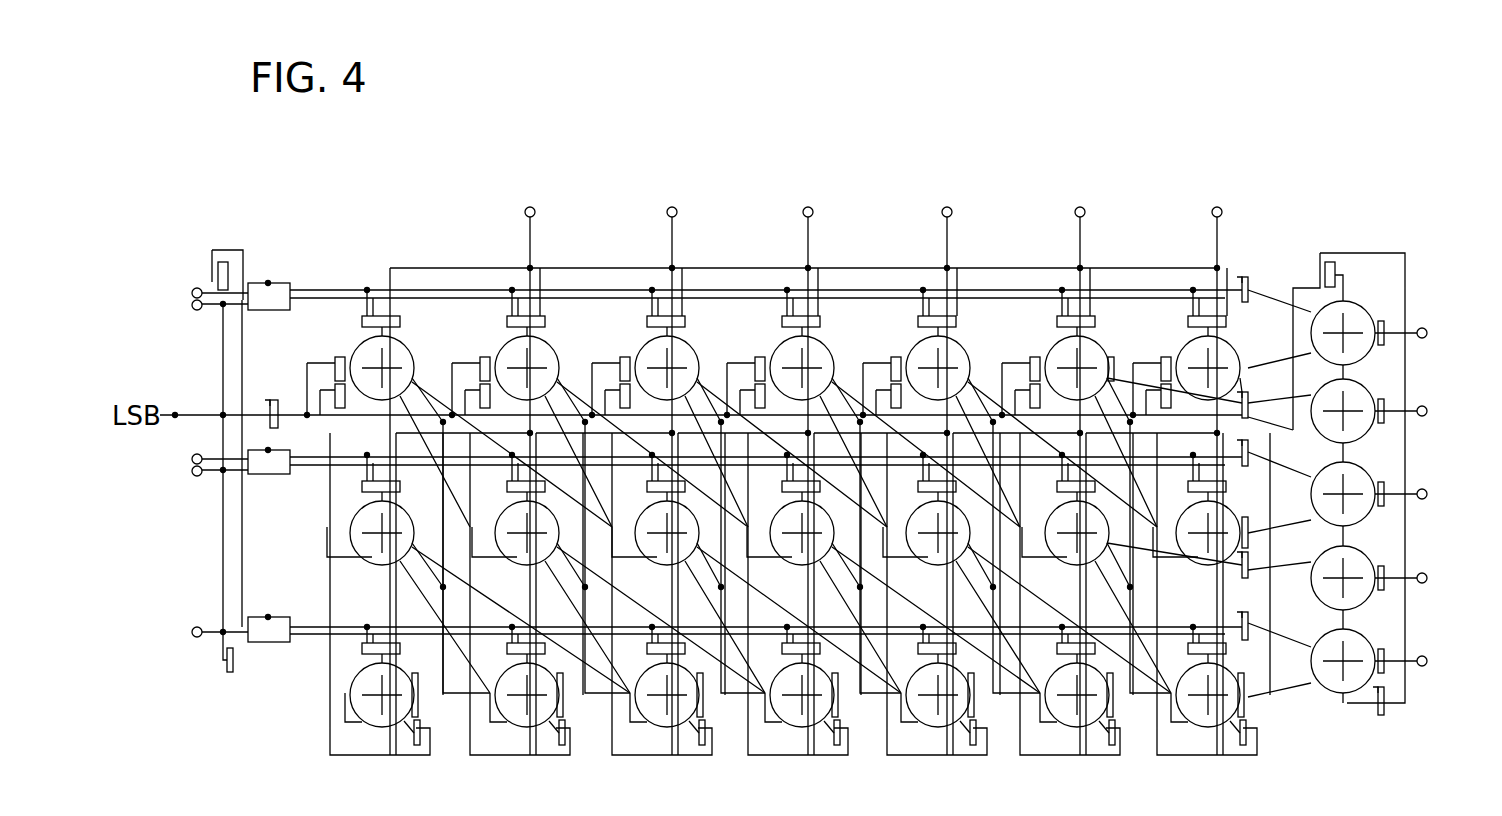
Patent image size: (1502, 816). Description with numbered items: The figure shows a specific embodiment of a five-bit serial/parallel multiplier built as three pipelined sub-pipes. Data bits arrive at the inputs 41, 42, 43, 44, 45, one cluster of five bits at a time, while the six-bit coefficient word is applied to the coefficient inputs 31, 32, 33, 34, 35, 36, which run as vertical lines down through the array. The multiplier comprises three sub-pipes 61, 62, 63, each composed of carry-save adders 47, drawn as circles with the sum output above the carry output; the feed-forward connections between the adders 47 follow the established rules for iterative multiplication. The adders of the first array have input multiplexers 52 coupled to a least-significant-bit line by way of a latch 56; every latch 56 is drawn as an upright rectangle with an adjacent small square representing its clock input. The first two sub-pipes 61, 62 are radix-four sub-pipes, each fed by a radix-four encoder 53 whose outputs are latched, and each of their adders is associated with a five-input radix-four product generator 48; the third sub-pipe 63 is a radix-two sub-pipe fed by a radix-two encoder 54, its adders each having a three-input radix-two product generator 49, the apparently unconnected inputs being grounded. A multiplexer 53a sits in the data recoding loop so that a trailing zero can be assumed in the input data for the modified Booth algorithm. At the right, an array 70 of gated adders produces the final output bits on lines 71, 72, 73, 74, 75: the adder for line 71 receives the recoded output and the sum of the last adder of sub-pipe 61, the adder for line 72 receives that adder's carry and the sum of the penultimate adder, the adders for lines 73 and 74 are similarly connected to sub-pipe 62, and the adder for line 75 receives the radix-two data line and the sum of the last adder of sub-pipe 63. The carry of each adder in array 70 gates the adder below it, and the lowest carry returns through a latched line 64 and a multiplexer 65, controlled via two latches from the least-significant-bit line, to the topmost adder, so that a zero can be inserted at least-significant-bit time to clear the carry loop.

The coefficient input 31 is at (533, 207).
The coefficient input 32 is at (675, 207).
The coefficient input 33 is at (811, 207).
The coefficient input 34 is at (950, 207).
The coefficient input 35 is at (1083, 207).
The coefficient input 36 is at (1220, 207).
The data input 41 is at (192, 294).
The data input 42 is at (197, 311).
The data input 43 is at (192, 460).
The data input 44 is at (197, 477).
The data input 45 is at (193, 637).
The carry-save adder 47 is at (414, 360).
The radix-4 product generator 48 is at (402, 322).
The radix-2 product generator 49 is at (362, 649).
The input multiplexer 52 is at (338, 357).
The radix-4 encoder 53 is at (273, 283).
The multiplexer 53a is at (226, 250).
The radix-2 encoder 54 is at (268, 617).
The latch 56 is at (276, 400).
The first sub-pipe 61 is at (1012, 345).
The second sub-pipe 62 is at (302, 553).
The third sub-pipe 63 is at (297, 718).
The latched line 64 is at (1390, 245).
The multiplexer 65 is at (1325, 273).
The array of gated adders 70 is at (1332, 708).
The output line 71 is at (1428, 333).
The output line 72 is at (1428, 411).
The output line 73 is at (1428, 494).
The output line 74 is at (1428, 578).
The output line 75 is at (1428, 661).